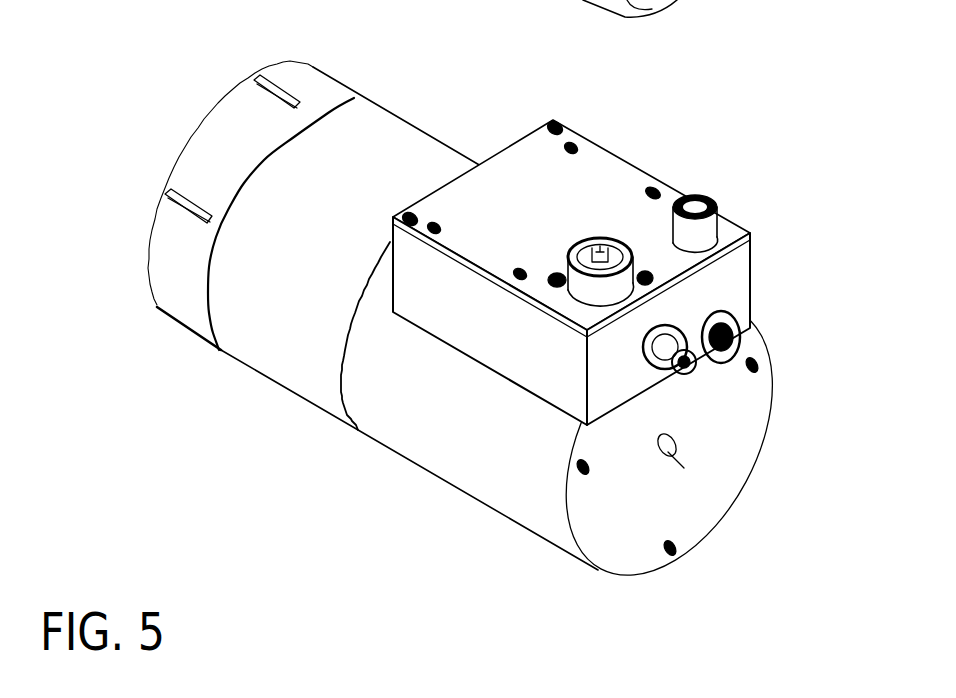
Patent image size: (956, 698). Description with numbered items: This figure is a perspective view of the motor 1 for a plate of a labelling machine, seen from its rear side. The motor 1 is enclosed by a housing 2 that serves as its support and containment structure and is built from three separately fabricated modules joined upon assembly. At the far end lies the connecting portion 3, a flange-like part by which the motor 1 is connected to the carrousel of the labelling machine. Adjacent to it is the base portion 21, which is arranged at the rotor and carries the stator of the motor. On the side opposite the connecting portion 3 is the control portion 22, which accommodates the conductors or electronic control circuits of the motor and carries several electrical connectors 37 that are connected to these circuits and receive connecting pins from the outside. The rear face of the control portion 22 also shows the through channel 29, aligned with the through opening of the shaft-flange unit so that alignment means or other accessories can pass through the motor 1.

The motor 1 is at (372, 480).
The housing 2 is at (380, 402).
The connecting portion 3 is at (279, 100).
The base portion 21 is at (402, 143).
The control portion 22 is at (463, 452).
The through channel 29 is at (697, 468).
The electrical connector 37 is at (603, 232).